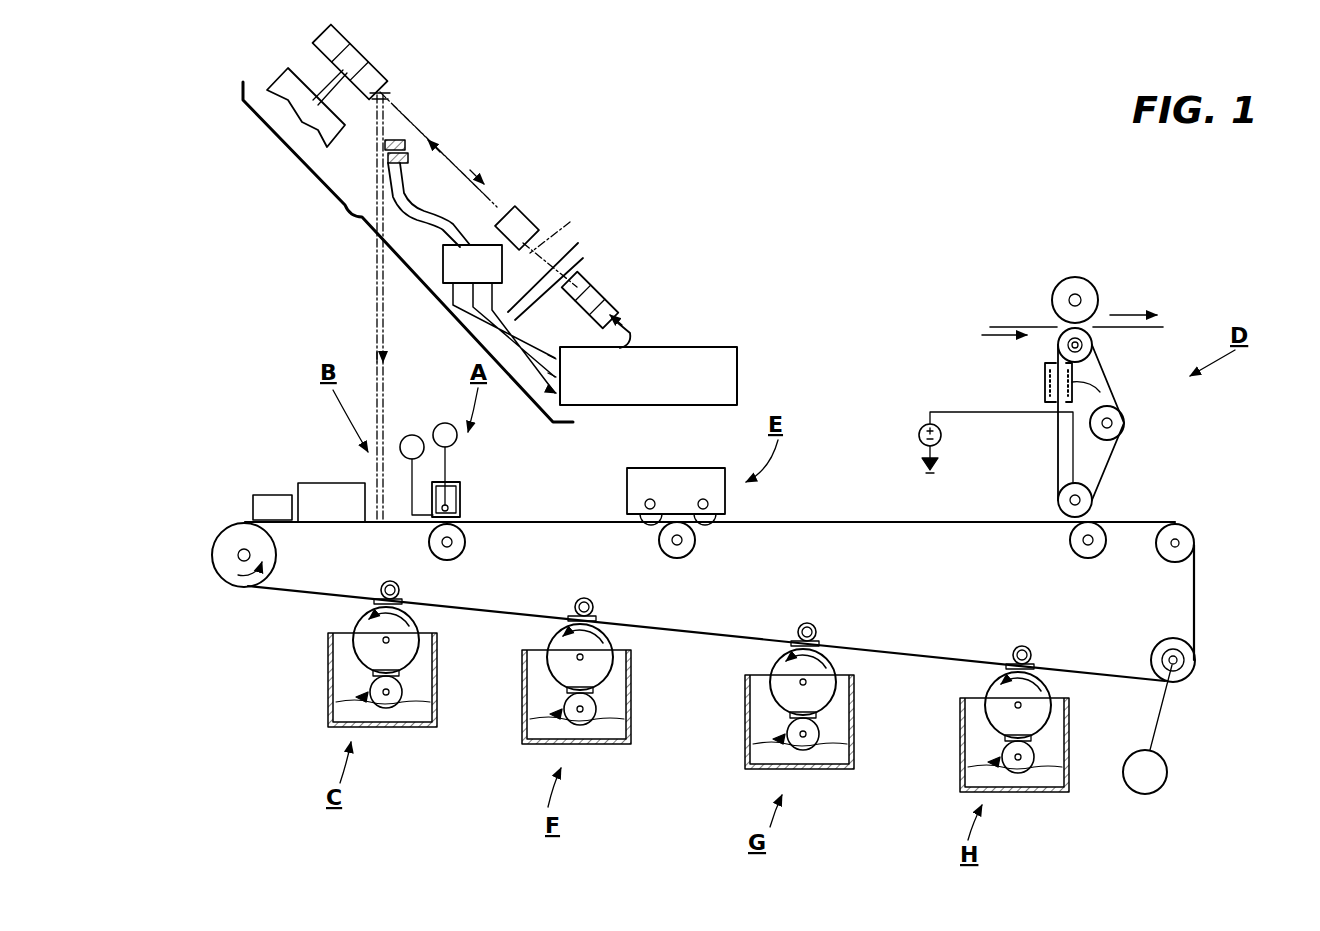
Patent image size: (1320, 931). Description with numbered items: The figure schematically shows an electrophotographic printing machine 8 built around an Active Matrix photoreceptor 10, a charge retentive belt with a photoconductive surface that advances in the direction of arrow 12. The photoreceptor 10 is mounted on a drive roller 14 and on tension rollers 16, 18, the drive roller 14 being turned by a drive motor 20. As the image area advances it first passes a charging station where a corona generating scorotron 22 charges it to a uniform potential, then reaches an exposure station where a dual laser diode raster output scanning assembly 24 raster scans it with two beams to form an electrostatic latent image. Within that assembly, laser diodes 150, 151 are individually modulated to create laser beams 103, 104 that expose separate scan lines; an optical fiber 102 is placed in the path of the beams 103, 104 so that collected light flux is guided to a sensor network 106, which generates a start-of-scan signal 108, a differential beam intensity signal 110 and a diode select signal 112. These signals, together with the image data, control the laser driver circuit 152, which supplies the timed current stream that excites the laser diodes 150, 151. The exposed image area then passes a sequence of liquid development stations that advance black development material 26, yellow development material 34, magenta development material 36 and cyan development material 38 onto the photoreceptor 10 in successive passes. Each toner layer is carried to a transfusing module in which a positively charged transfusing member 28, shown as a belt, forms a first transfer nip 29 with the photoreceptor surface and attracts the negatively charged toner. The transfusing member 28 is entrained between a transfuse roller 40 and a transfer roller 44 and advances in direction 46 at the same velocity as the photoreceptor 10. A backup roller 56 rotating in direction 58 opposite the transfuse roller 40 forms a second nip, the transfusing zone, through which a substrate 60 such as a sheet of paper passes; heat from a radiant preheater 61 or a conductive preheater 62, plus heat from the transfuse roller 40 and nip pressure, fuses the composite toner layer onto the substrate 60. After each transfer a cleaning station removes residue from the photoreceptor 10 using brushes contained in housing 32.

The electrophotographic printing machine 8 is at (990, 176).
The photoreceptor 10 is at (883, 521).
The arrow 12 is at (548, 530).
The drive roller 14 is at (1195, 665).
The tension roller 16 is at (225, 537).
The tension roller 18 is at (1183, 532).
The drive motor 20 is at (1161, 785).
The corona generating scorotron 22 is at (464, 478).
The dual laser diode raster output scanning assembly 24 is at (343, 214).
The development material 26 is at (391, 730).
The transfusing member 28 is at (1127, 433).
The first transfer nip 29 is at (1110, 508).
The housing 32 is at (722, 478).
The development material 34 is at (585, 750).
The development material 36 is at (808, 773).
The development material 38 is at (1022, 797).
The transfuse roller 40 is at (1058, 345).
The transfer roller 44 is at (1058, 498).
The direction 46 is at (1098, 384).
The backup roller 56 is at (1082, 287).
The direction 58 is at (1045, 293).
The substrate 60 is at (1013, 327).
The radiant preheater 61 is at (1045, 388).
The conductive preheater 62 is at (1100, 392).
The optical fiber 102 is at (404, 190).
The laser beam 103 is at (375, 272).
The laser beam 104 is at (404, 107).
The sensor network 106 is at (483, 250).
The start-of-scan signal 108 is at (520, 344).
The differential beam intensity signal 110 is at (566, 285).
The diode select signal 112 is at (564, 269).
The laser diode 150 is at (603, 307).
The laser diode 151 is at (593, 295).
The image data source and laser driver circuit 152 is at (683, 347).